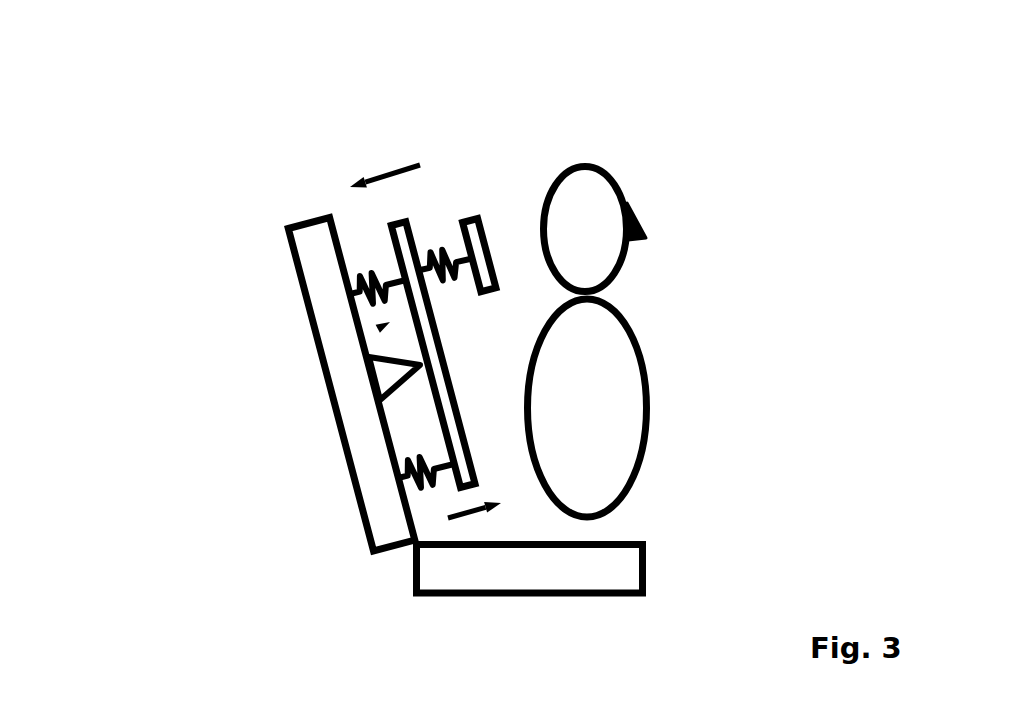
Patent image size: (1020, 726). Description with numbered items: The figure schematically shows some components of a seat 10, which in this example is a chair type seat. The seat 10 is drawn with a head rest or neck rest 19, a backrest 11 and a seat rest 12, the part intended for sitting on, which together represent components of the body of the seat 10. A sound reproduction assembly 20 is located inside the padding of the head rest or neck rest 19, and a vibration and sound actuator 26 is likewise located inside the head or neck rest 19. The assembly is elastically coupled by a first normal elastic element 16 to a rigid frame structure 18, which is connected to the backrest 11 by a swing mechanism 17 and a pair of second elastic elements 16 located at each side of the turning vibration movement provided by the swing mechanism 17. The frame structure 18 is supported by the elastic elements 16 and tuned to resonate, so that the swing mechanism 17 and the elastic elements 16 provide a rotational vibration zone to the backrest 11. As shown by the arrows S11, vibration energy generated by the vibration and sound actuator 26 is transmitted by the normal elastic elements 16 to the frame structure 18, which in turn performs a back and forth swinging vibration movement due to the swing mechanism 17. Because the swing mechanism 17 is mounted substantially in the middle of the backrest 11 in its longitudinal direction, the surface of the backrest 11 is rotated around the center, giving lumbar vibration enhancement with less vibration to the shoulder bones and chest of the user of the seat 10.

The seat 10 is at (153, 204).
The backrest 11 is at (315, 270).
The seat rest 12 is at (522, 563).
The elastic elements 16 is at (366, 262).
The swing mechanism 17 is at (395, 370).
The frame structure 18 is at (393, 222).
The head rest or neck rest 19 is at (581, 177).
The vibration and sound actuator 26 is at (488, 228).
The sound reproduction assembly 20 is at (377, 329).
The arrows indicating vibration energy transmission S11 is at (398, 163).